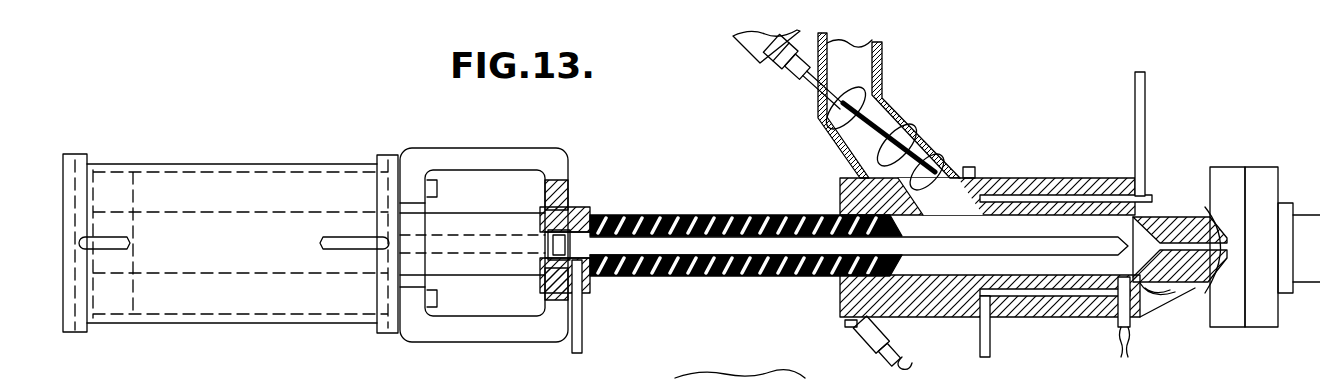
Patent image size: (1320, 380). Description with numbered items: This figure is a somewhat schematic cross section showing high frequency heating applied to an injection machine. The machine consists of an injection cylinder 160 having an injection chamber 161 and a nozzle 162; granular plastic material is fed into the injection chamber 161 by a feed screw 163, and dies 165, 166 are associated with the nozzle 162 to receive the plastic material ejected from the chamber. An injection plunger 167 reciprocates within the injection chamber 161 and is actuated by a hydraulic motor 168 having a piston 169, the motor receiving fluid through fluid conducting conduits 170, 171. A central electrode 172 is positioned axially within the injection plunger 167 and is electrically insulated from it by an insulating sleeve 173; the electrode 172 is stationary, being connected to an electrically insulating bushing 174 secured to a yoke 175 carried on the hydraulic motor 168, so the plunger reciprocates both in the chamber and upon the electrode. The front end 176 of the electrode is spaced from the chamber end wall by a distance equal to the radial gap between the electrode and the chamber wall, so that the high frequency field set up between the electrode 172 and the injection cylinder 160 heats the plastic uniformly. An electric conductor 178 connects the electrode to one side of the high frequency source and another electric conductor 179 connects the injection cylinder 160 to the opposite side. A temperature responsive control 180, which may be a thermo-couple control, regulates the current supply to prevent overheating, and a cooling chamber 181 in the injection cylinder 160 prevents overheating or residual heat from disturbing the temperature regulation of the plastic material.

The injection cylinder 160 is at (1007, 204).
The injection chamber 161 is at (955, 205).
The nozzle 162 is at (1182, 207).
The feed screw 163 is at (936, 118).
The die 165 is at (1226, 178).
The die 166 is at (1265, 180).
The injection plunger 167 is at (859, 246).
The hydraulic motor 168 is at (288, 188).
The piston 169 is at (128, 200).
The fluid conducting conduit 170 is at (106, 237).
The fluid conducting conduit 171 is at (362, 243).
The central electrode 172 is at (793, 277).
The insulating sleeve 173 is at (786, 195).
The electrically insulating bushing 174 is at (585, 207).
The yoke 175 is at (502, 132).
The front end 176 is at (1158, 298).
The electric conductor 178 is at (600, 345).
The electric conductor 179 is at (904, 348).
The temperature responsive control 180 is at (1120, 318).
The cooling chamber 181 is at (1095, 200).